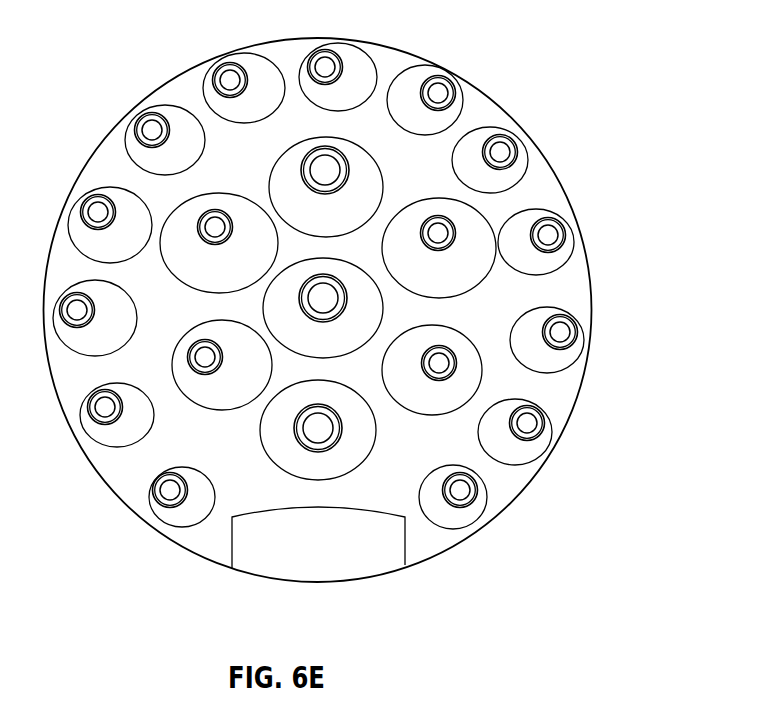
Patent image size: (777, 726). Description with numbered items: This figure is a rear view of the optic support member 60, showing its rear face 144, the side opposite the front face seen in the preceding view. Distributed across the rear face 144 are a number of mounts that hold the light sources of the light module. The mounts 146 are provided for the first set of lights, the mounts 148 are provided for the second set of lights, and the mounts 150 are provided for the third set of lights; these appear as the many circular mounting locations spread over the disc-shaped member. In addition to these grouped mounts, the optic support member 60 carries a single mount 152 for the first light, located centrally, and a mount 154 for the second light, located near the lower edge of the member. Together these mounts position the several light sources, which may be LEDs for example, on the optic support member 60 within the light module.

The optic support member 60 is at (340, 322).
The rear face 144 is at (518, 473).
The mounts for the first set of lights 146 is at (215, 230).
The mounts for the second set of lights 148 is at (204, 360).
The mounts for the third set of lights 150 is at (462, 494).
The mount for the first light 152 is at (321, 298).
The mount for the second light 154 is at (326, 565).